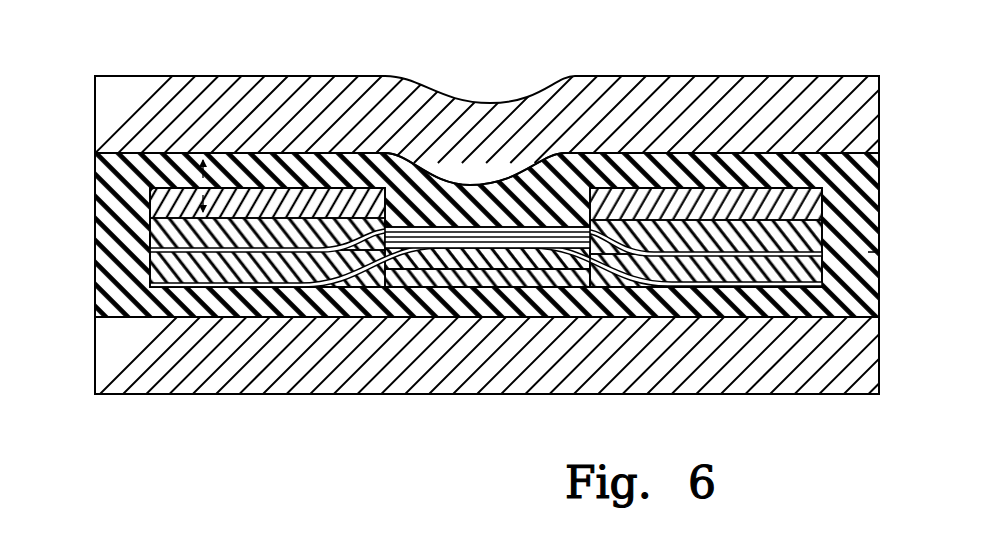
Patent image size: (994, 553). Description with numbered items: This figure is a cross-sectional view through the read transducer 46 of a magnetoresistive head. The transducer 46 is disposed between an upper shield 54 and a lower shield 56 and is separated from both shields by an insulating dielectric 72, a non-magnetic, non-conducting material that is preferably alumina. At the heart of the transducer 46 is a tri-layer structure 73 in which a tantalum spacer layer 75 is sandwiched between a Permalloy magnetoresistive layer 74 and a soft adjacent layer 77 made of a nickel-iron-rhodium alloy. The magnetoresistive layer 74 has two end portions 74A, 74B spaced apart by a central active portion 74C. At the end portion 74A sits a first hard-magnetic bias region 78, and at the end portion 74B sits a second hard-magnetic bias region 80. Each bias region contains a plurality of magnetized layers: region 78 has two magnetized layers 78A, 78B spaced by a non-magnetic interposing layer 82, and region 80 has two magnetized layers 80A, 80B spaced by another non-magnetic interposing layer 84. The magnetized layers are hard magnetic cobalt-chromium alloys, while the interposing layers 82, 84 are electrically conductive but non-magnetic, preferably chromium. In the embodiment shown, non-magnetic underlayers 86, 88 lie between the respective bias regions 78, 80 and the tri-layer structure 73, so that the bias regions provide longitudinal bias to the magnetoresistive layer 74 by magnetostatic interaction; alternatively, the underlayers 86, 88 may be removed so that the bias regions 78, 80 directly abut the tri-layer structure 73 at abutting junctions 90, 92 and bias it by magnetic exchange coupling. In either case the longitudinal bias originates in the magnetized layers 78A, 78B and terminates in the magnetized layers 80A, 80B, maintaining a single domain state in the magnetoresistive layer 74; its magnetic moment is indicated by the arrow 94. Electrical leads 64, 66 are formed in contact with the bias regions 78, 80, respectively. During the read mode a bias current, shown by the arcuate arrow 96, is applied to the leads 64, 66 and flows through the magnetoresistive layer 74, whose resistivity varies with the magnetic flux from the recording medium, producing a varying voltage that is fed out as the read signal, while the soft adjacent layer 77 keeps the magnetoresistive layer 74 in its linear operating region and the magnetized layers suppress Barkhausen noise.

The read transducer 46 is at (88, 175).
The shield 54 is at (308, 100).
The shield 56 is at (250, 375).
The electrical lead 64 is at (185, 185).
The electrical lead 66 is at (790, 187).
The insulating dielectric 72 is at (102, 228).
The tri-layer structure 73 is at (560, 292).
The magnetoresistive layer 74 is at (527, 236).
The end portion 74A is at (405, 228).
The end portion 74B is at (572, 240).
The central active portion 74C is at (490, 236).
The spacer layer 75 is at (408, 250).
The soft adjacent layer 77 is at (480, 275).
The hard-magnetic bias region 78 is at (262, 212).
The magnetized layer 78A is at (150, 232).
The magnetized layer 78B is at (100, 298).
The hard-magnetic bias region 80 is at (728, 217).
The magnetized layer 80A is at (879, 200).
The magnetized layer 80B is at (879, 297).
The non-magnetic interposing layer 82 is at (150, 256).
The non-magnetic interposing layer 84 is at (879, 252).
The non-magnetic underlayer 86 is at (137, 270).
The non-magnetic underlayer 88 is at (837, 317).
The abutting junction 90 is at (313, 193).
The abutting junction 92 is at (652, 280).
The magnetic moment arrow 94 is at (458, 232).
The bias current arrow 96 is at (598, 232).